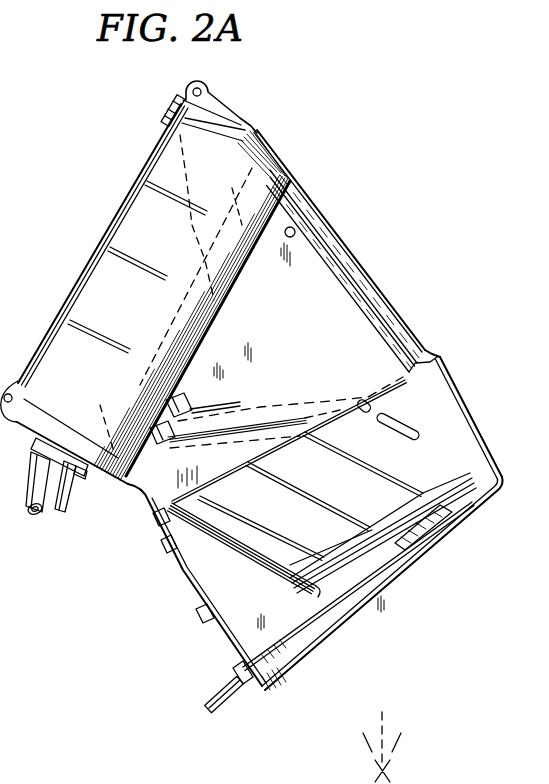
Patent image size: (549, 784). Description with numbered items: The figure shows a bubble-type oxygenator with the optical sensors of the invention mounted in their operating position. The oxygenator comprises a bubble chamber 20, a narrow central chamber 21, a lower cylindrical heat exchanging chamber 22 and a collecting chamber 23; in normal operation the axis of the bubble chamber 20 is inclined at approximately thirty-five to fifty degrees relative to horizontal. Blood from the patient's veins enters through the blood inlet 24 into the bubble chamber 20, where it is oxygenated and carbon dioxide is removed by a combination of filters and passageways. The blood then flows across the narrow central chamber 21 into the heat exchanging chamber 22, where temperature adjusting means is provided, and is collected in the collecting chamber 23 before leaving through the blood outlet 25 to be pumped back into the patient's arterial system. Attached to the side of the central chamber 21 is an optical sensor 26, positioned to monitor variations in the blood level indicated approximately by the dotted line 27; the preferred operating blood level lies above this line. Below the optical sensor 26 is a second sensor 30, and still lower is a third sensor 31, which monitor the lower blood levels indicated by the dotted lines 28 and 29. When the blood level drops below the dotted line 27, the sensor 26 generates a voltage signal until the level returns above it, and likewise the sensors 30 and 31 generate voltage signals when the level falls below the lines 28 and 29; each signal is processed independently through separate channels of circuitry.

The bubble chamber 20 is at (231, 177).
The narrow central chamber 21 is at (303, 273).
The lower cylindrical heat exchanging chamber 22 is at (445, 437).
The collecting chamber 23 is at (305, 620).
The blood inlet 24 is at (33, 514).
The blood outlet 25 is at (207, 707).
The optical sensor 26 is at (187, 407).
The dotted line 27 is at (235, 410).
The dotted line 28 is at (263, 423).
The dotted line 29 is at (193, 447).
The second sensor 30 is at (162, 407).
The third sensor 31 is at (150, 430).